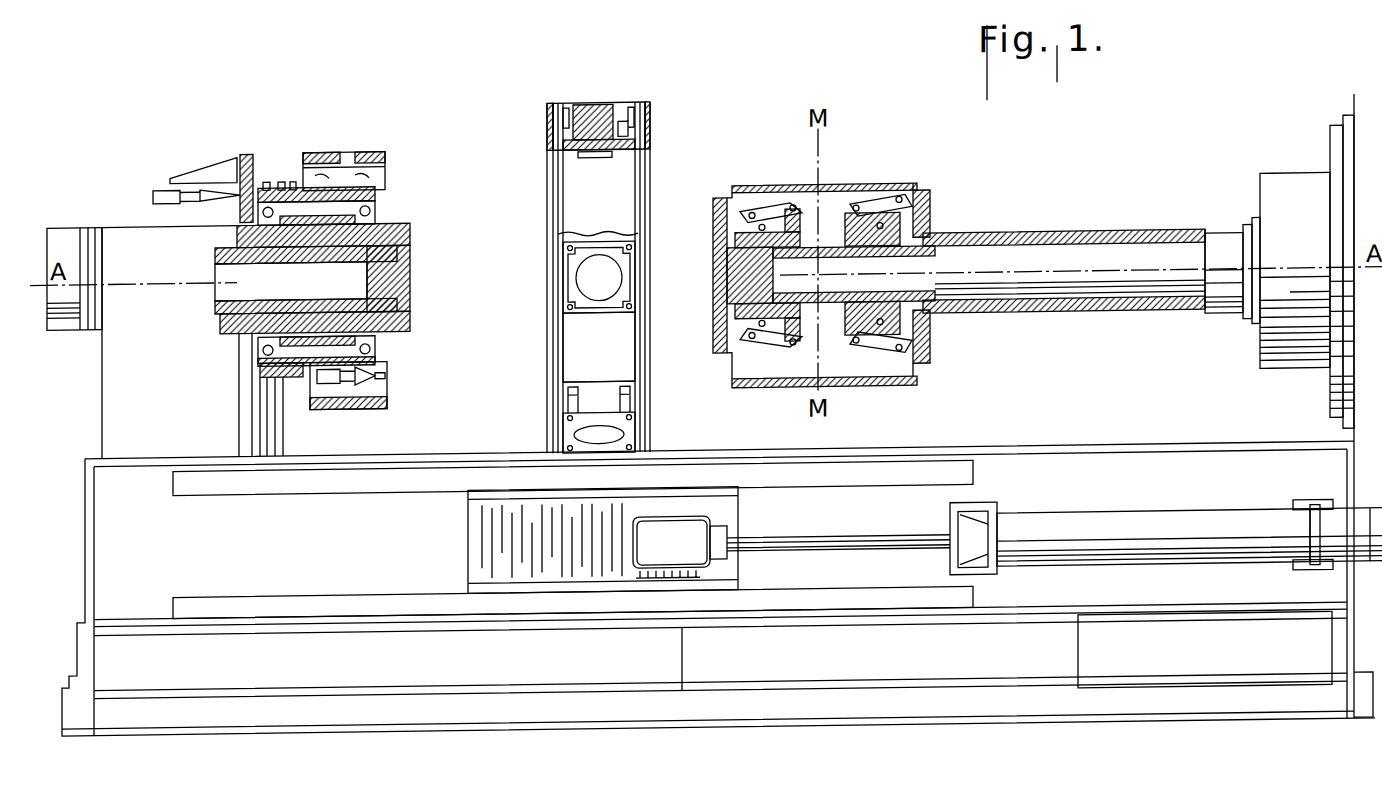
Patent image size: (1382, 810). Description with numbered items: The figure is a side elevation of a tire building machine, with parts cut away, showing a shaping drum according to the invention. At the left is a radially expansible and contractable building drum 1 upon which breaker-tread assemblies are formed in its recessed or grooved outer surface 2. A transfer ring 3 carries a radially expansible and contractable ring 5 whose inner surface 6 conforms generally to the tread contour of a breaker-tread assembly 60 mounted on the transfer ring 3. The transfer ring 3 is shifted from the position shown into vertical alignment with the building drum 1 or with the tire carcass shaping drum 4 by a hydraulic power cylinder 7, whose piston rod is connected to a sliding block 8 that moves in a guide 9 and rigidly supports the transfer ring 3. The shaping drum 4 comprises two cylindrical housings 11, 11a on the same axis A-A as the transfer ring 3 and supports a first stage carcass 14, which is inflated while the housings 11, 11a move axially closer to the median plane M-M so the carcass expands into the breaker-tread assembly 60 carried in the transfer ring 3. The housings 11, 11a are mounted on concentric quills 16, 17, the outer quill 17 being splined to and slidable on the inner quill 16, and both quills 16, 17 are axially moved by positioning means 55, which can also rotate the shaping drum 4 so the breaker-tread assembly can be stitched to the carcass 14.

The building drum 1 is at (372, 157).
The recessed or grooved outer surface 2 is at (340, 157).
The transfer ring 3 is at (647, 206).
The tire carcass shaping drum 4 is at (937, 352).
The radially expansible and contractable ring 5 is at (632, 155).
The inner surface 6 is at (587, 150).
The breaker-tread assembly 60 is at (576, 162).
The hydraulic power cylinder 7 is at (1135, 523).
The sliding block 8 is at (477, 543).
The guide 9 is at (295, 604).
The housing 11 is at (713, 228).
The housing 11a is at (930, 216).
The first stage carcass 14 is at (847, 197).
The inner quill 16 is at (1070, 275).
The outer quill 17 is at (1040, 246).
The positioning means 55 is at (1277, 200).